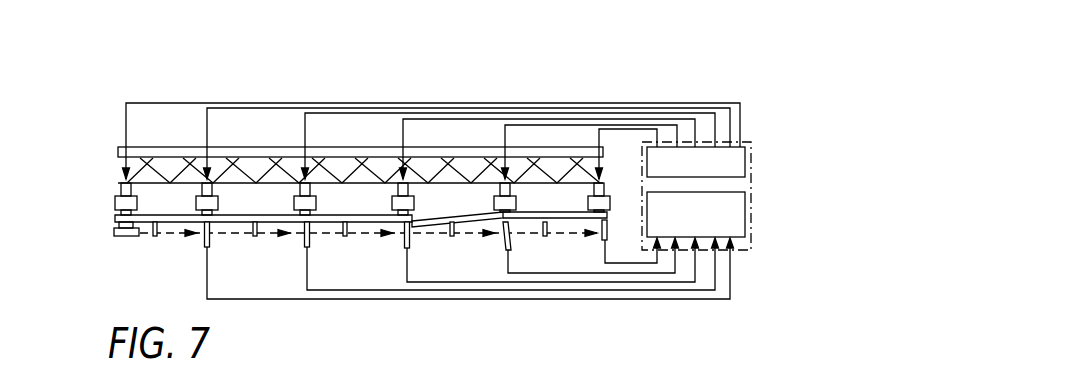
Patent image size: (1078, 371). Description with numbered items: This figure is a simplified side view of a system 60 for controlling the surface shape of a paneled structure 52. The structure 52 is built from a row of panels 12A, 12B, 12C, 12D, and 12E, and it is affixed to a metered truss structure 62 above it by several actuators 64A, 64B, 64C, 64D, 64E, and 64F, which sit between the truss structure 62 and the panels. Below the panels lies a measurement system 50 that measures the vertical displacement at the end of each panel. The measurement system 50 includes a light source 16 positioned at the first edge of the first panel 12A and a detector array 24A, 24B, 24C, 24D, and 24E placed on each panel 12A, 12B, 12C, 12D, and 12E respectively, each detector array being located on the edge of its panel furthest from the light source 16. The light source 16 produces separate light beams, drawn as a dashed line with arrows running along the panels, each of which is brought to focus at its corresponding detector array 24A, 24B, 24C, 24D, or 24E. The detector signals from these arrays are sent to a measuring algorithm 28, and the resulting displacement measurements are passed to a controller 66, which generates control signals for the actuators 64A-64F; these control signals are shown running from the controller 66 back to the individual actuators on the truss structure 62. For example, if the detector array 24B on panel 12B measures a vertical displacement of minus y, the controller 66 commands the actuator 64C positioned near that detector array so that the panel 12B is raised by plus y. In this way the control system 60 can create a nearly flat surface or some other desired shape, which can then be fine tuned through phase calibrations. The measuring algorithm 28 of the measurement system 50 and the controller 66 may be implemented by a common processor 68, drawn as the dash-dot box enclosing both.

The system for controlling the surface shape 60 is at (724, 62).
The metered truss structure 62 is at (118, 152).
The actuator 64A is at (115, 203).
The actuator 64B is at (196, 205).
The actuator 64C is at (294, 205).
The actuator 64D is at (392, 205).
The actuator 64E is at (494, 205).
The actuator 64F is at (588, 205).
The paneled structure 52 is at (90, 226).
The light source 16 is at (113, 234).
The first panel 12A is at (156, 238).
The panel 12B is at (254, 237).
The panel 12C is at (345, 236).
The panel 12D is at (452, 236).
The panel 12E is at (545, 236).
The detector array 24A is at (204, 241).
The detector array 24B is at (304, 243).
The detector array 24C is at (404, 242).
The detector array 24D is at (505, 242).
The detector array 24E is at (601, 240).
The measurement system 50 is at (190, 288).
The common processor 68 is at (751, 150).
The controller 66 is at (746, 172).
The measuring algorithm 28 is at (746, 226).